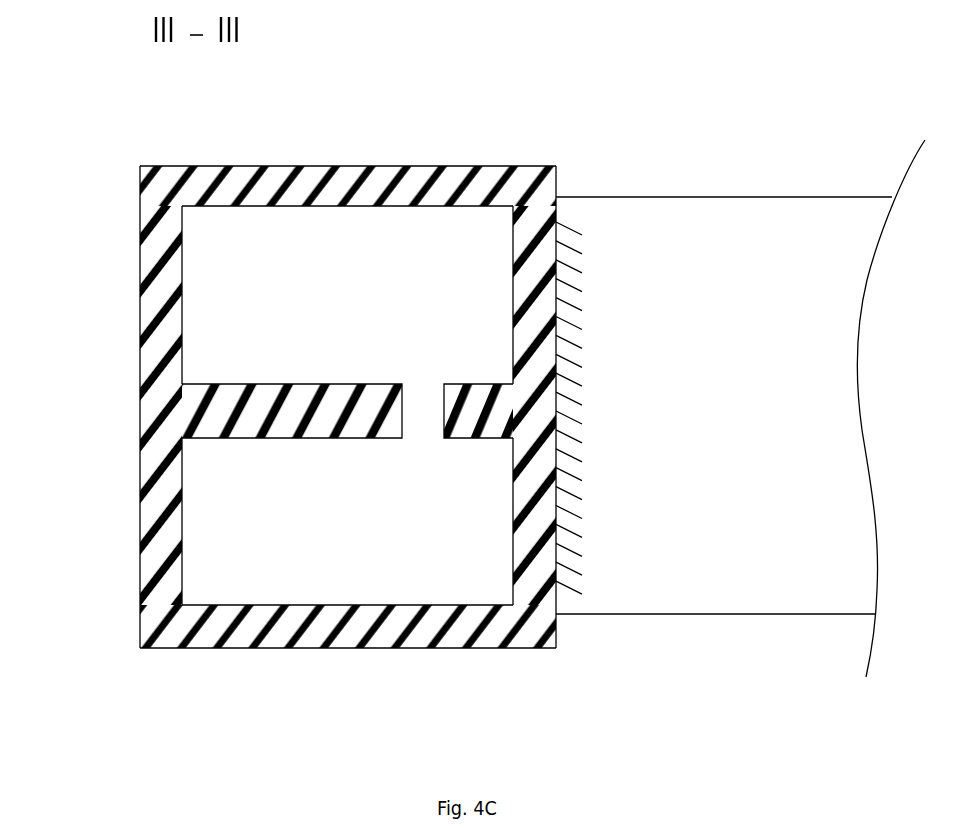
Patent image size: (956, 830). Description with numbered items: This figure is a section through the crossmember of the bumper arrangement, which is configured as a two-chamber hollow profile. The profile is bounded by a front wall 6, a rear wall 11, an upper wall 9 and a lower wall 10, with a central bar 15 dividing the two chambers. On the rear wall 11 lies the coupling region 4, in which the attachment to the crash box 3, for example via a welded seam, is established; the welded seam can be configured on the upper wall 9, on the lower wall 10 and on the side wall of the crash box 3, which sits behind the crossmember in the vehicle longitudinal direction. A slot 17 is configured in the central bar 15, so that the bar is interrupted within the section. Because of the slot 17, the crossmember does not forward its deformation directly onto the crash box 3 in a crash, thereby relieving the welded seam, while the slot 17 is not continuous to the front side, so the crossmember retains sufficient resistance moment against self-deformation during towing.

The crash box 3 is at (762, 588).
The coupling region 4 is at (573, 268).
The front wall 6 is at (140, 535).
The upper wall 9 is at (438, 166).
The lower wall 10 is at (408, 648).
The rear wall 11 is at (556, 547).
The central bar 15 is at (262, 384).
The slot 17 is at (423, 395).